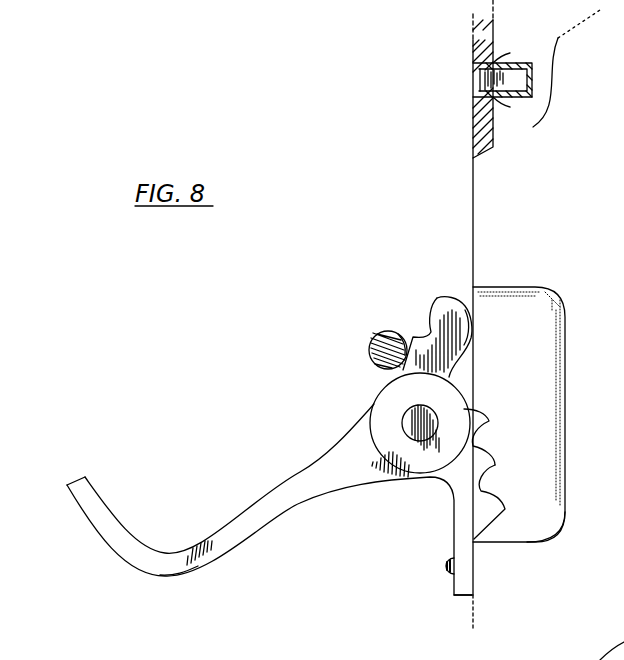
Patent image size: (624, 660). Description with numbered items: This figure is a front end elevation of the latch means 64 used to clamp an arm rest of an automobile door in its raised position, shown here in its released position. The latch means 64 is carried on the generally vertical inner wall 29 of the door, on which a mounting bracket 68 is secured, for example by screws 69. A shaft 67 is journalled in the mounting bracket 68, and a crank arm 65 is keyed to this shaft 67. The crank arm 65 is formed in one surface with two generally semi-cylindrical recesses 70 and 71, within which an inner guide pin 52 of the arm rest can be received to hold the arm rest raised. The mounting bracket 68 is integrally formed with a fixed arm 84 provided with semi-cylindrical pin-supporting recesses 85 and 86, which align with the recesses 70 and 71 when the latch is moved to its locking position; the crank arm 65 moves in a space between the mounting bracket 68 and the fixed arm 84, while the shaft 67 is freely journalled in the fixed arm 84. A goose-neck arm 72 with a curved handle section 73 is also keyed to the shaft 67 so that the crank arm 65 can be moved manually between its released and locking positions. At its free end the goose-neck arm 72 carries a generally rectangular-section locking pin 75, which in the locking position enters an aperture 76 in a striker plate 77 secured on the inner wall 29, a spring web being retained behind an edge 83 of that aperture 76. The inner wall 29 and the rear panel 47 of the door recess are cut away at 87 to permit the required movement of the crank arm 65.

The striker plate 77 is at (473, 53).
The aperture 76 is at (473, 84).
The edge of the aperture 83 is at (479, 76).
The inner metal wall 29 is at (473, 212).
The rear side panel 47 is at (575, 223).
The latch means 64 is at (318, 363).
The semi-cylindrical recess 70 is at (436, 330).
The crank arm 65 is at (460, 337).
The inner guide pin 52 is at (387, 331).
The semi-cylindrical recess 71 is at (370, 347).
The shaft 67 is at (425, 420).
The pin-supporting recess 86 is at (478, 449).
The pin-supporting recess 85 is at (484, 501).
The fixed arm 84 is at (452, 458).
The cut away 87 is at (563, 506).
The curved handle section 73 is at (262, 515).
The locking pin 75 is at (85, 498).
The goose-neck arm 72 is at (199, 574).
The screw 69 is at (440, 566).
The mounting bracket 68 is at (456, 598).